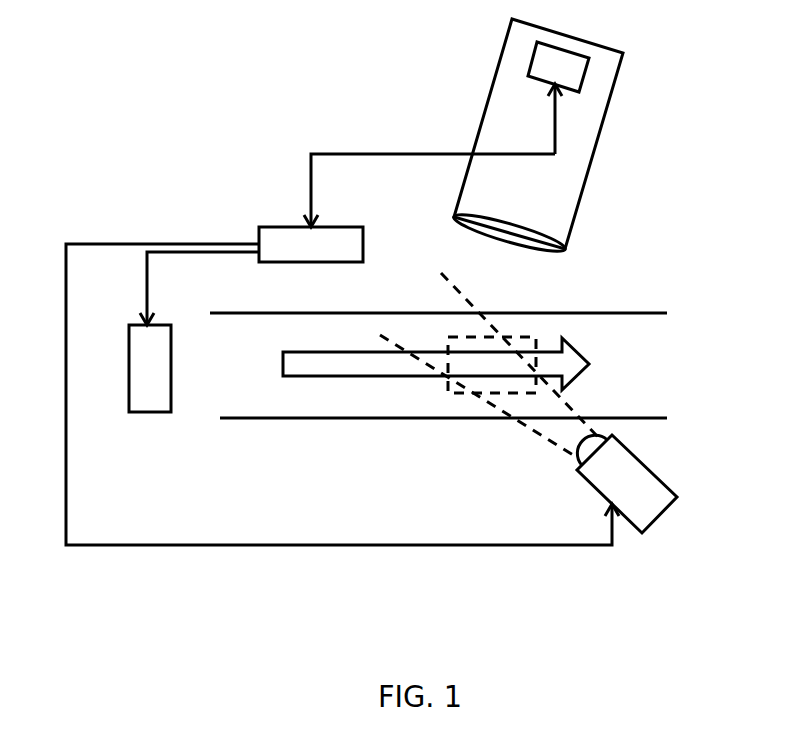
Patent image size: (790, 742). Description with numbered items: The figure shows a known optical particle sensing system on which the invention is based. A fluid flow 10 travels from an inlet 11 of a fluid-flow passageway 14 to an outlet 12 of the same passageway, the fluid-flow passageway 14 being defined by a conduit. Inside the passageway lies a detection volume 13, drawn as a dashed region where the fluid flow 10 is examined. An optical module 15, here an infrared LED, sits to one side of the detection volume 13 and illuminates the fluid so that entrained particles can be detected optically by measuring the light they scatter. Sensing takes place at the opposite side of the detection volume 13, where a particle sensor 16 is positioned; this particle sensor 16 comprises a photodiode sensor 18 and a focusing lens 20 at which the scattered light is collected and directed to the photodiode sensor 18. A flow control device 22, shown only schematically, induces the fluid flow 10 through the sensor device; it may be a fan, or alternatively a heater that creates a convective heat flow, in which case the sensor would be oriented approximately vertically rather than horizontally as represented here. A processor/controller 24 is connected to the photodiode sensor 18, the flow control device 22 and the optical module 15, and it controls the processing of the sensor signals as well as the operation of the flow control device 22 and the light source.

The fluid flow 10 is at (307, 352).
The inlet 11 is at (205, 378).
The outlet 12 is at (632, 381).
The detection volume 13 is at (508, 342).
The fluid-flow passageway 14 is at (620, 312).
The optical module 15 is at (582, 475).
The particle sensor 16 is at (612, 73).
The photodiode sensor 18 is at (485, 99).
The focusing lens 20 is at (525, 228).
The flow control device 22 is at (130, 413).
The processor/controller 24 is at (337, 264).